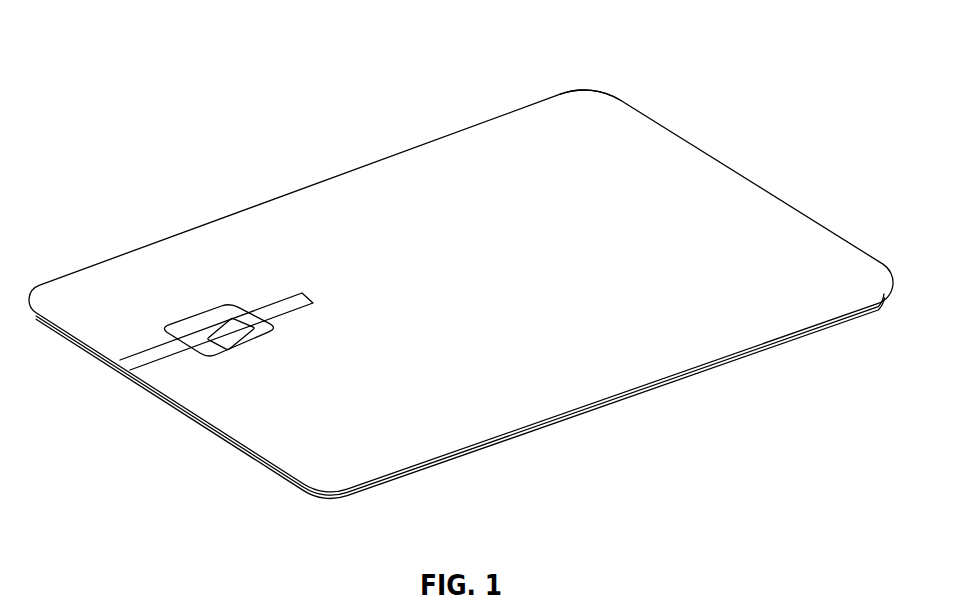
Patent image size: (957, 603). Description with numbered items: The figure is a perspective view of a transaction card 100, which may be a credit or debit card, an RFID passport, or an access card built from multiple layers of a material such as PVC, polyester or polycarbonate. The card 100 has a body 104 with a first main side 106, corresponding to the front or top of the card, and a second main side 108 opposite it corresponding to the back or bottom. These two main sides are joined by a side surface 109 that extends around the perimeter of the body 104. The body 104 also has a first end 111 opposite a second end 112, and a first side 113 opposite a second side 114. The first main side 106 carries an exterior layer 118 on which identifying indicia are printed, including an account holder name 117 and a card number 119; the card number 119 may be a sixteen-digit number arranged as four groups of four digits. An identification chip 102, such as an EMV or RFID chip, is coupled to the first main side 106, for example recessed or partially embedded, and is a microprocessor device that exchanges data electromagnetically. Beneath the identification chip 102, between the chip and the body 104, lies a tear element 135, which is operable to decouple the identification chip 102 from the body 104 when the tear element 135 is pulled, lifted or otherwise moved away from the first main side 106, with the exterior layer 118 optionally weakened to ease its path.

The transaction card 100 is at (103, 82).
The identification chip 102 is at (180, 325).
The body 104 is at (530, 140).
The first main side 106 is at (333, 200).
The second main side 108 is at (605, 412).
The side surface 109 is at (262, 460).
The first end 111 is at (50, 318).
The second end 112 is at (835, 237).
The first side 113 is at (243, 205).
The second side 114 is at (783, 340).
The account holder name 117 is at (506, 421).
The exterior layer 118 is at (750, 291).
The card number 119 is at (557, 285).
The tear element 135 is at (152, 380).